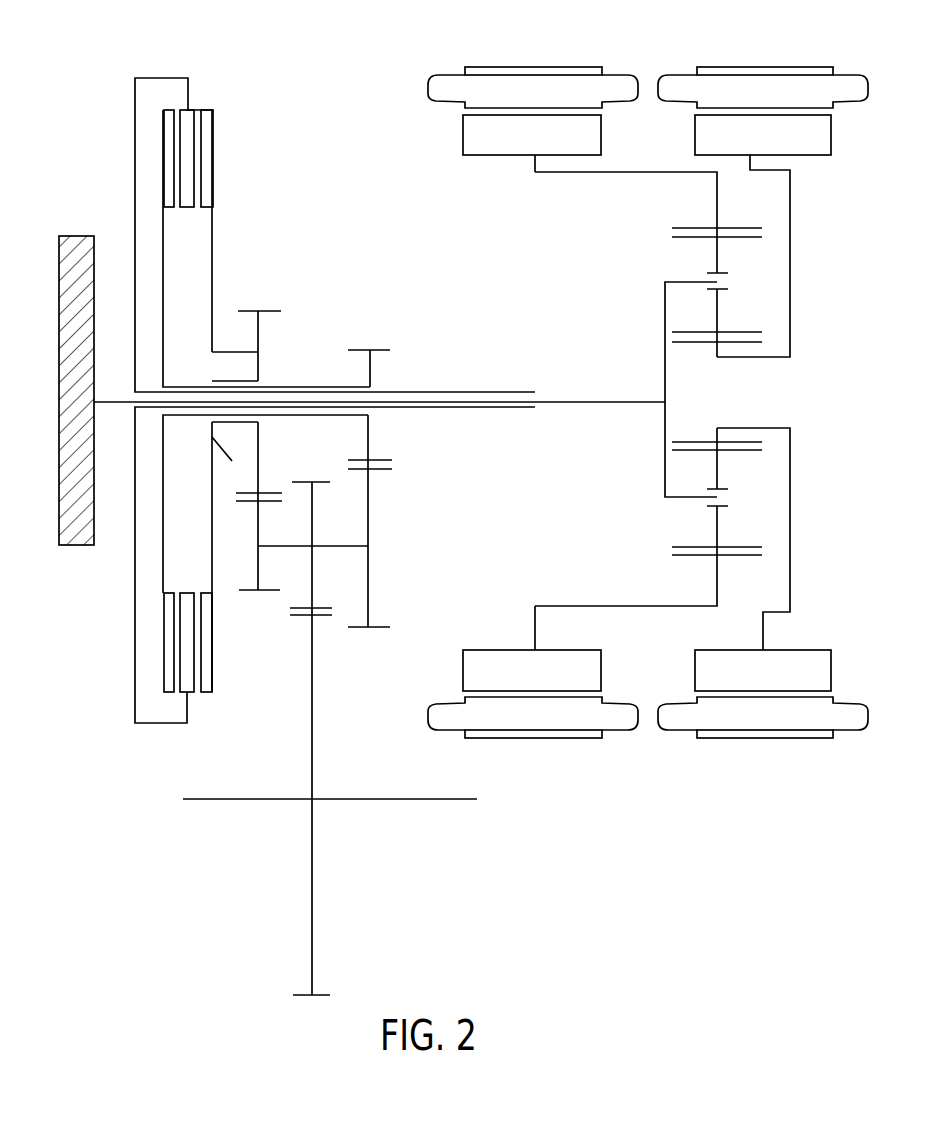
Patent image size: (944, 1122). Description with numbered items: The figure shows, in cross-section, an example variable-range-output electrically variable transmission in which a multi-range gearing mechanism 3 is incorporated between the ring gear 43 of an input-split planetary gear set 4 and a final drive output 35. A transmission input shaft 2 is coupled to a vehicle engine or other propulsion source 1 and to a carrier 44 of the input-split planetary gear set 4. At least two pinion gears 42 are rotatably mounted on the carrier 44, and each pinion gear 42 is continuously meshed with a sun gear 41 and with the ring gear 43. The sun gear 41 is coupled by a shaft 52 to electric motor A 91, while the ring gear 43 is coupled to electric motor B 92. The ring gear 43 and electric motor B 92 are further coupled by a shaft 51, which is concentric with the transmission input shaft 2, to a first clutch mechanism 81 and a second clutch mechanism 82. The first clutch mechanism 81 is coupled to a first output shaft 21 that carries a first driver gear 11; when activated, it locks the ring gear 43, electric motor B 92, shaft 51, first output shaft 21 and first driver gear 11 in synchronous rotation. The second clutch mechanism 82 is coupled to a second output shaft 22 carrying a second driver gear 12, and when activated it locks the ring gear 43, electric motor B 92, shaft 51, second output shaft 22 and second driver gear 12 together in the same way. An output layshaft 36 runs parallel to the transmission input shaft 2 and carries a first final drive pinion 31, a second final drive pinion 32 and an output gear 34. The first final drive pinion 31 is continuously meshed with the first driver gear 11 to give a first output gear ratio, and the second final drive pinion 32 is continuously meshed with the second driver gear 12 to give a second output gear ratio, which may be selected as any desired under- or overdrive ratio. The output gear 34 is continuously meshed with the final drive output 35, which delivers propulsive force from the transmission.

The engine 1 is at (92, 235).
The transmission input shaft 2 is at (121, 401).
The multi-range gearing mechanism 3 is at (342, 279).
The input-split planetary gear set 4 is at (814, 379).
The first driver gear 11 is at (371, 366).
The second driver gear 12 is at (259, 352).
The first output shaft 21 is at (162, 240).
The second output shaft 22 is at (233, 380).
The first final drive pinion 31 is at (369, 501).
The second final drive pinion 32 is at (259, 532).
The output gear 34 is at (310, 591).
The final drive output 35 is at (311, 853).
The output layshaft 36 is at (347, 548).
The sun gear 41 is at (700, 343).
The pinion gear 42 is at (718, 312).
The ring gear 43 is at (735, 226).
The carrier 44 is at (664, 322).
The shaft 51 is at (134, 126).
The shaft 52 is at (791, 191).
The first clutch mechanism 81 is at (161, 97).
The second clutch mechanism 82 is at (214, 97).
The electric motor A 91 is at (832, 136).
The electric motor B 92 is at (462, 136).